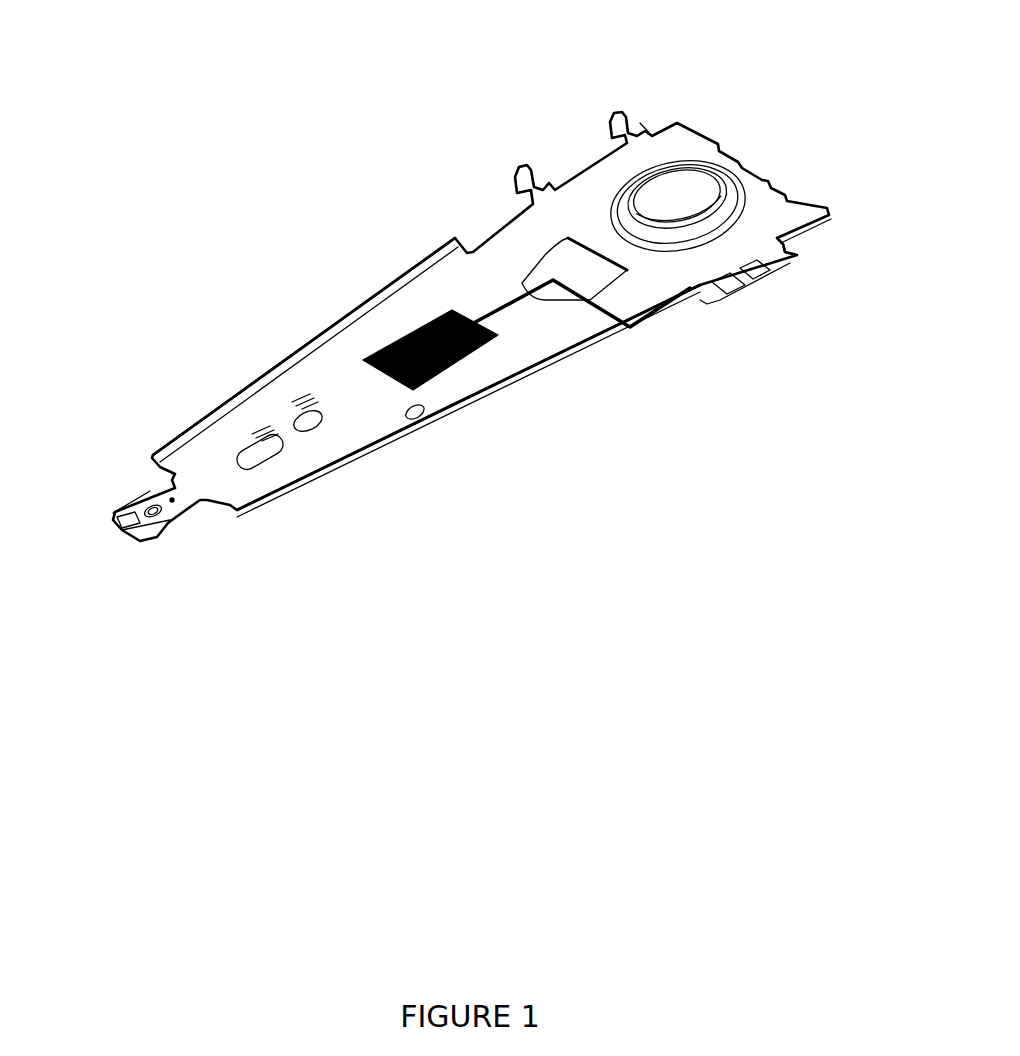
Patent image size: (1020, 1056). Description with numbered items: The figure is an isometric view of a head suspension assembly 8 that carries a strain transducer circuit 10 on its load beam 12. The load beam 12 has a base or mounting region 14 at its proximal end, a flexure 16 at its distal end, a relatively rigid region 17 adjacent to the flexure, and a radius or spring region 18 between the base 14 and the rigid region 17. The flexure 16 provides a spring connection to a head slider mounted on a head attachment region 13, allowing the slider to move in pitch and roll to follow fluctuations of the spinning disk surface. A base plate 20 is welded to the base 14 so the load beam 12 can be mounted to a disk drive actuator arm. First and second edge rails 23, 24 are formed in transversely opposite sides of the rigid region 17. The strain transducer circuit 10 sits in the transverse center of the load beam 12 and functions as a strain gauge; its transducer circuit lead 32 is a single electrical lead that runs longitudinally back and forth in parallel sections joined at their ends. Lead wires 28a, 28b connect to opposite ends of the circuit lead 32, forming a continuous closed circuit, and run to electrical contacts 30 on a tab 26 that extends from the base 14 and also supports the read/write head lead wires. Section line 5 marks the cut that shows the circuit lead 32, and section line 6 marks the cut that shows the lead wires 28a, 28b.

The head suspension assembly 8 is at (582, 545).
The strain transducer circuit 10 is at (437, 378).
The load beam 12 is at (276, 143).
The head attachment region 13 is at (137, 533).
The base or mounting region 14 is at (655, 132).
The flexure 16 is at (172, 537).
The rigid region 17 is at (370, 447).
The radius or spring region 18 is at (510, 213).
The base plate 20 is at (822, 218).
The first edge rail 23 is at (285, 350).
The second edge rail 24 is at (428, 392).
The tab 26 is at (793, 251).
The transducer circuit lead wire 28a is at (510, 300).
The transducer circuit lead wire 28b is at (523, 300).
The electrical contacts 30 is at (733, 284).
The transducer circuit lead 32 is at (377, 347).
The section line 5— 5 is at (378, 338).
The section line 6— 6 is at (583, 292).